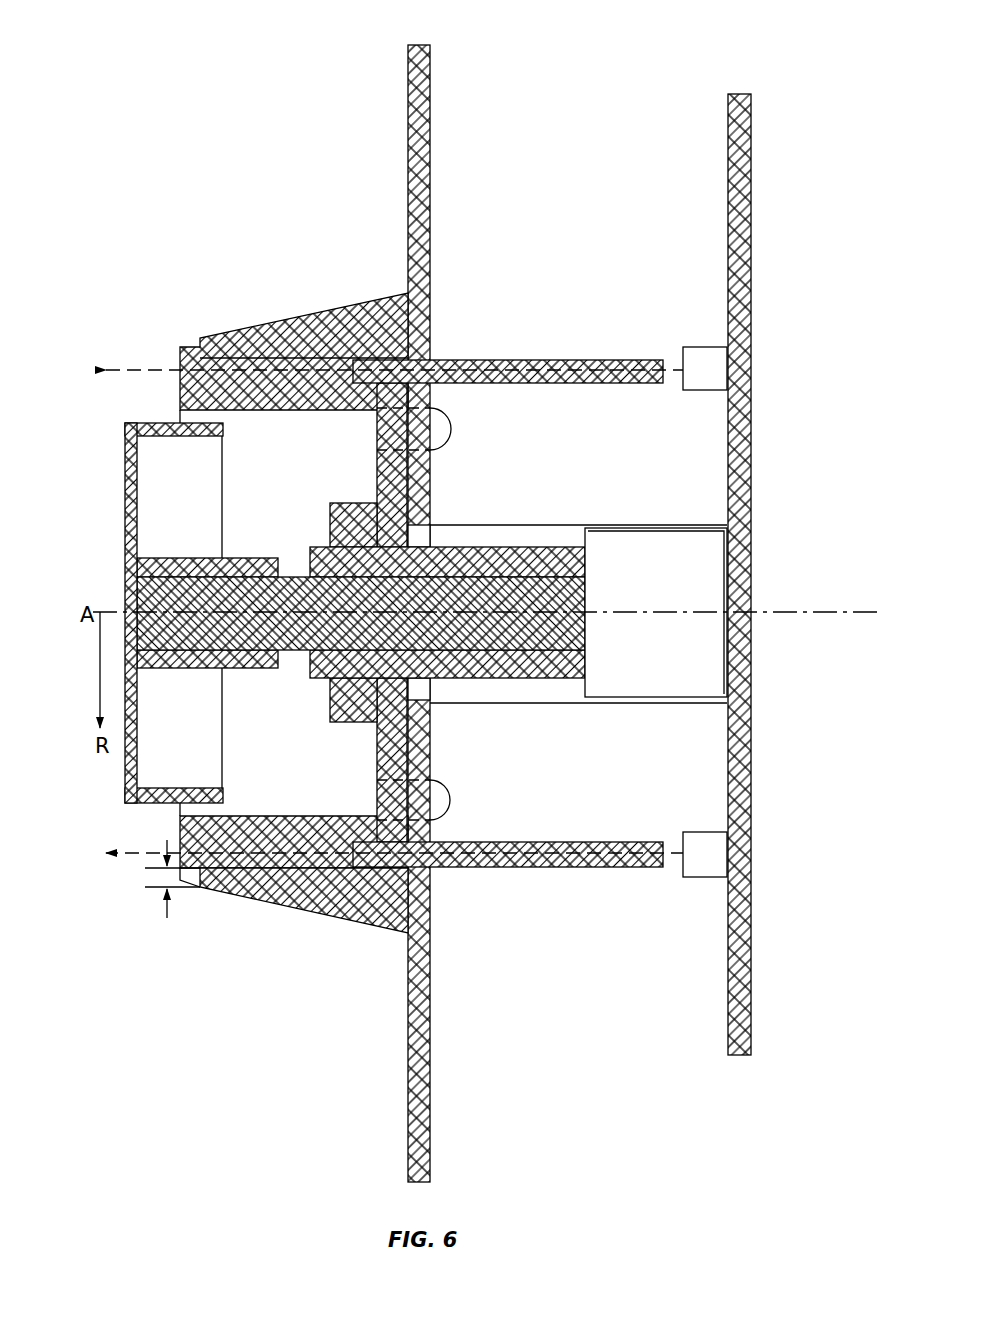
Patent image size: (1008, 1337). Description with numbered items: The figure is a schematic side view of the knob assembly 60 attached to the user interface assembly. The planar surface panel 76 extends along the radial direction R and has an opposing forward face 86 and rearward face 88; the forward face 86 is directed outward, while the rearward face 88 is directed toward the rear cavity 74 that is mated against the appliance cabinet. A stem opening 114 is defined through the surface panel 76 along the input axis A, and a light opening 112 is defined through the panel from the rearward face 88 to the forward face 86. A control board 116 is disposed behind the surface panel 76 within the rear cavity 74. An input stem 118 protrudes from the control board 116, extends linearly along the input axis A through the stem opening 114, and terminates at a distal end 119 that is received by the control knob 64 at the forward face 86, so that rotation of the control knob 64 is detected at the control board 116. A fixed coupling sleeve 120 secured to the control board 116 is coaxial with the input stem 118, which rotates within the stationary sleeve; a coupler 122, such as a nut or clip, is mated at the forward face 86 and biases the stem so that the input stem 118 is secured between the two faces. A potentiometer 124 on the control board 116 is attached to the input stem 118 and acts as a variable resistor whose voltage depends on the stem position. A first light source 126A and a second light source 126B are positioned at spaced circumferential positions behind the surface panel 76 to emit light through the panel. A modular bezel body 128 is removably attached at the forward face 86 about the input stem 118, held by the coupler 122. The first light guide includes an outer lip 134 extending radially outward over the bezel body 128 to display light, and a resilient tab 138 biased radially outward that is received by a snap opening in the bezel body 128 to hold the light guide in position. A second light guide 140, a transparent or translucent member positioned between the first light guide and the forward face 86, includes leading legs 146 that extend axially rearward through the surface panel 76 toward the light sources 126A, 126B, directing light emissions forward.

The knob assembly 60 is at (213, 168).
The control knob 64 is at (132, 470).
The rear cavity 74 is at (561, 297).
The surface panel 76 is at (417, 50).
The forward face 86 is at (406, 119).
The rearward face 88 is at (432, 172).
The light opening 112 is at (442, 389).
The stem opening 114 is at (437, 538).
The control board 116 is at (743, 280).
The input stem 118 is at (493, 590).
The distal end 119 is at (135, 594).
The fixed coupling sleeve 120 is at (467, 670).
The coupler 122 is at (348, 706).
The potentiometer 124 is at (626, 540).
The first light source 126A is at (690, 350).
The second light source 126B is at (705, 877).
The modular bezel body 128 is at (322, 320).
The outer lip 134 is at (172, 895).
The resilient tab 138 is at (452, 799).
The second light guide 140 is at (360, 868).
The leading leg 146 is at (532, 360).